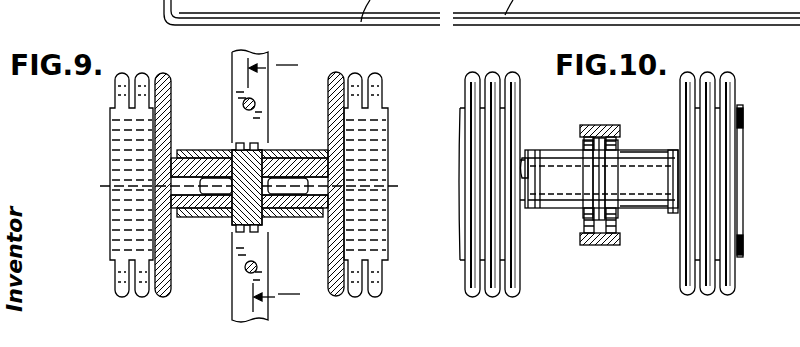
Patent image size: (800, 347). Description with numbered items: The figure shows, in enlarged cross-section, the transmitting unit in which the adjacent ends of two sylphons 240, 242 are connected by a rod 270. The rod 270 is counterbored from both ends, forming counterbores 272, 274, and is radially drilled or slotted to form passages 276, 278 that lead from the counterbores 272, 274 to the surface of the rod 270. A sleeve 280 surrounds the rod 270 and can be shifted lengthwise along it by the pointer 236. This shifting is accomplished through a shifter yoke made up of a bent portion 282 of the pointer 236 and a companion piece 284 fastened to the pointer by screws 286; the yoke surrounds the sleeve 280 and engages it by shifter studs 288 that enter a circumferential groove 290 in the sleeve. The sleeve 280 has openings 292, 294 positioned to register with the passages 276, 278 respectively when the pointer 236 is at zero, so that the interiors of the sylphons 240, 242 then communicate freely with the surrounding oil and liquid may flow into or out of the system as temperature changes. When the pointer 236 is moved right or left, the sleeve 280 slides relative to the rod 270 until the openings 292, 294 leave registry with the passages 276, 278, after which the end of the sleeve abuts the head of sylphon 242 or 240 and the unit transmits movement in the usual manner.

In FIG. 9, the pointer 236 is at (236, 305).
In FIG. 9, the sylphon 240 is at (147, 50).
In FIG. 10, the sylphon 240 is at (470, 92).
In FIG. 9, the sylphon 242 is at (375, 72).
In FIG. 10, the sylphon 242 is at (728, 140).
In FIG. 9, the rod 270 is at (172, 165).
In FIG. 10, the rod 270 is at (525, 156).
In FIG. 9, the counterbore 272 is at (152, 187).
In FIG. 9, the counterbore 274 is at (370, 185).
In FIG. 10, the counterbore 274 is at (462, 184).
In FIG. 9, the passage 276 is at (217, 170).
In FIG. 9, the passage 278 is at (324, 156).
In FIG. 9, the sleeve 280 is at (318, 150).
In FIG. 10, the sleeve 280 is at (656, 214).
In FIG. 10, the bent portion 282 is at (590, 125).
In FIG. 10, the companion piece 284 is at (596, 245).
In FIG. 9, the screw 286 is at (253, 102).
In FIG. 10, the screw 286 is at (768, 181).
In FIG. 10, the shifter stud 288 is at (612, 144).
In FIG. 9, the circumferential groove 290 is at (250, 232).
In FIG. 10, the circumferential groove 290 is at (590, 212).
In FIG. 9, the opening 292 is at (226, 165).
In FIG. 10, the opening 292 is at (575, 184).
In FIG. 9, the opening 294 is at (279, 168).
In FIG. 10, the opening 294 is at (632, 180).